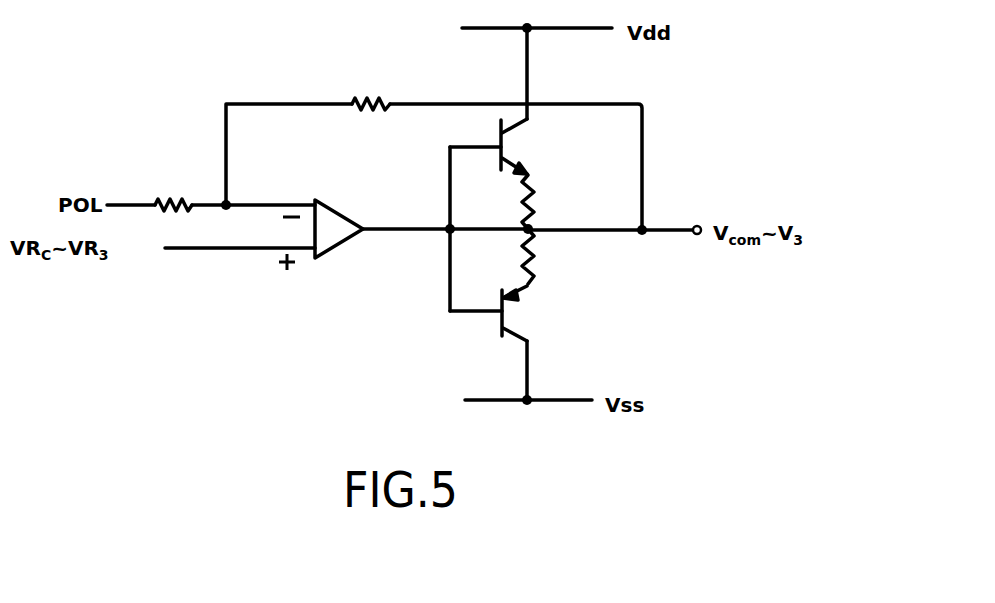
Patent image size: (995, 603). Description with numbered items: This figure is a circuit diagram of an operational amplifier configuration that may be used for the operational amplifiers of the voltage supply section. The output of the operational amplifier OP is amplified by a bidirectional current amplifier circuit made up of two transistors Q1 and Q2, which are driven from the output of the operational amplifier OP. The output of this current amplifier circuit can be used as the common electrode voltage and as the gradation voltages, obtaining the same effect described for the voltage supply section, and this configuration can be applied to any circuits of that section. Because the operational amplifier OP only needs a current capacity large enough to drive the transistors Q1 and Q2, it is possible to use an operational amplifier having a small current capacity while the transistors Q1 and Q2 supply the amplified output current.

The operational amplifier OP is at (325, 211).
The transistor Q1 is at (528, 146).
The transistor Q2 is at (529, 313).